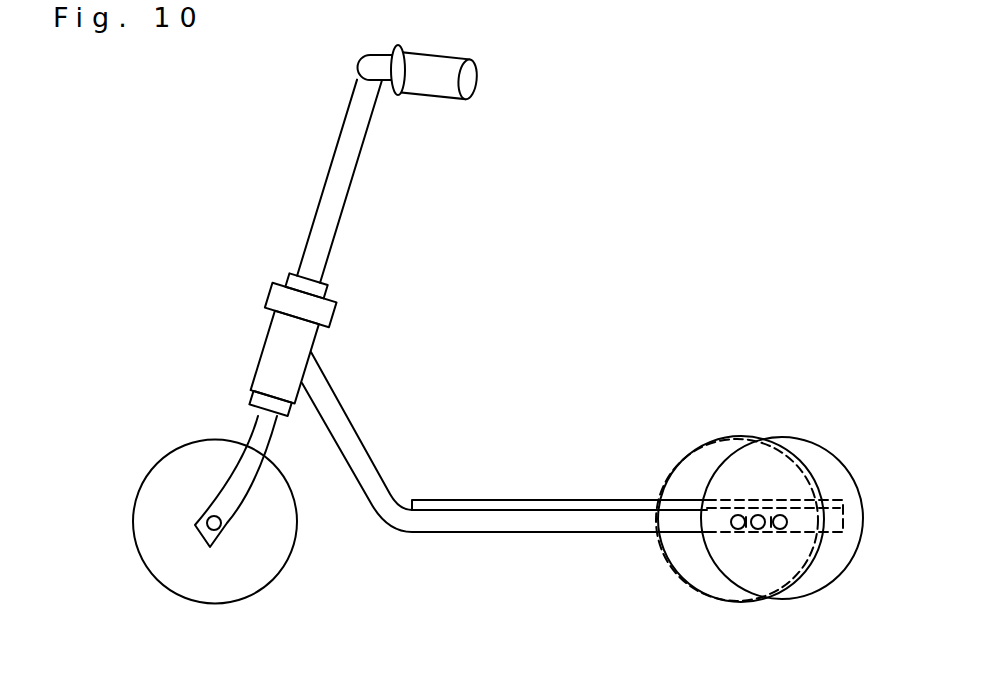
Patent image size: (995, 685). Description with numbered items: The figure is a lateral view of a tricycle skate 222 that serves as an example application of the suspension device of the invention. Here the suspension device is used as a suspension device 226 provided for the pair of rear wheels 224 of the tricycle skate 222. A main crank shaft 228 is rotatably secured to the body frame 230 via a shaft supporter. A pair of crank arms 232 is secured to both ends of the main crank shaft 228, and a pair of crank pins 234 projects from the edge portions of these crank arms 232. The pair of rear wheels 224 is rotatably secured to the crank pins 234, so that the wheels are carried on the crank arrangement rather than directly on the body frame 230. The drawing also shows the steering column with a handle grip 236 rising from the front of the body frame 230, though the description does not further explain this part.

The tricycle skate 222 is at (615, 189).
The rear wheels 224 is at (727, 452).
The suspension device 226 is at (748, 556).
The main crank shaft 228 is at (733, 514).
The body frame 230 is at (530, 523).
The crank arms 232 is at (749, 531).
The crank pins 234 is at (731, 527).
The handle grip 236 is at (437, 80).